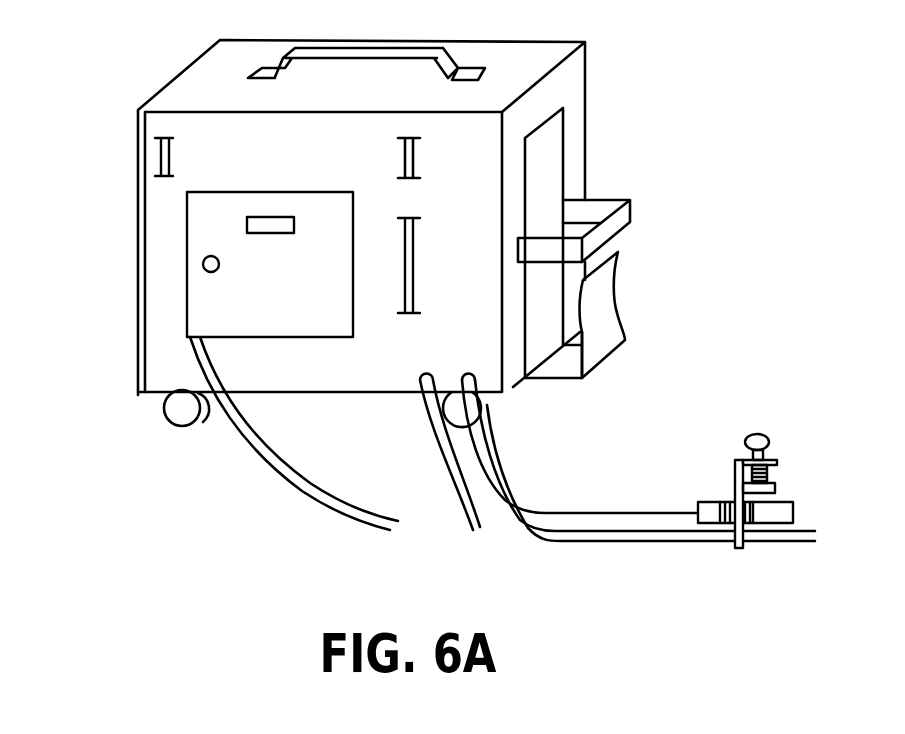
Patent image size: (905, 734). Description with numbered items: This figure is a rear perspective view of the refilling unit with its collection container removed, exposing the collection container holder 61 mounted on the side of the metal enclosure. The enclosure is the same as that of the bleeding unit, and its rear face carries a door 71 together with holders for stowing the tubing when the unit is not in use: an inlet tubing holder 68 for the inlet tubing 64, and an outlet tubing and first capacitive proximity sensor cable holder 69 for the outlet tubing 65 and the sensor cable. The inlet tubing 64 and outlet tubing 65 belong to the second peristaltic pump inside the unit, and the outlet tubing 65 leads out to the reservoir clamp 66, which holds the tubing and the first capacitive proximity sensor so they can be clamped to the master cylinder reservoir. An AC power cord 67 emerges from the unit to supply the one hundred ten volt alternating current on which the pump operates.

The collection container holder 61 is at (627, 295).
The inlet tubing 64 is at (430, 463).
The outlet tubing 65 is at (785, 553).
The reservoir clamp 66 is at (787, 462).
The AC power cord 67 is at (270, 470).
The inlet tubing holder 68 is at (420, 268).
The outlet tubing and first capacitive proximity sensor cable holder 69 is at (152, 158).
The door 71 is at (323, 207).